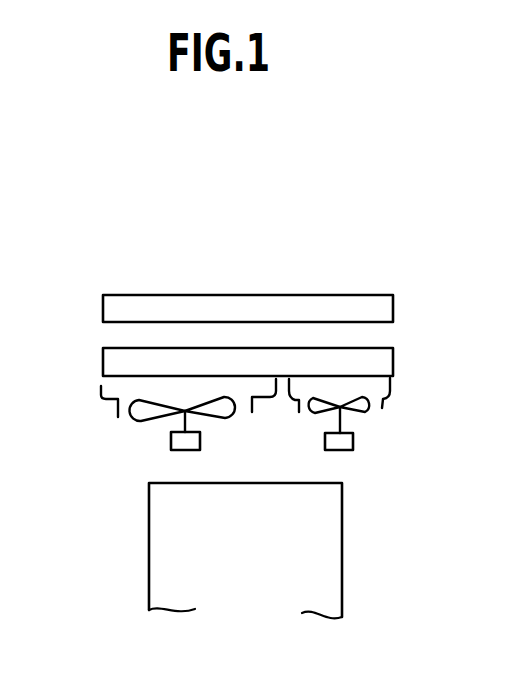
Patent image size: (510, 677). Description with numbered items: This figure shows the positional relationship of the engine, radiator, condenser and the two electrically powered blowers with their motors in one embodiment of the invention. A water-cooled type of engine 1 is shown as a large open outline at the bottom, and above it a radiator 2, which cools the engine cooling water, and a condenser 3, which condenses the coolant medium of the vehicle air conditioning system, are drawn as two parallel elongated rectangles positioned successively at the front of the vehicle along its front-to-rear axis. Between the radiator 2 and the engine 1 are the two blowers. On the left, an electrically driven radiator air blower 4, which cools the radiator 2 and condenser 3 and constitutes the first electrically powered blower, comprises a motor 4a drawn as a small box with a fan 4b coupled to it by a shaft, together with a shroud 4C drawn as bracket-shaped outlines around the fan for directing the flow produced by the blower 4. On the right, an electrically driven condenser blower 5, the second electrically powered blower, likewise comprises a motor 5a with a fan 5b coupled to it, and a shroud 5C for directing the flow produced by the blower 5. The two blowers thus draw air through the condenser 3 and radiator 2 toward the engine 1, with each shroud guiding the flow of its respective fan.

The water-cooled type of engine 1 is at (320, 563).
The radiator 2 is at (391, 358).
The condenser 3 is at (378, 296).
The radiator air blower 4 is at (153, 430).
The motor 4a is at (197, 447).
The fan 4b is at (141, 420).
The shroud 4C is at (101, 399).
The condenser blower 5 is at (368, 423).
The motor 5a is at (348, 450).
The fan 5b is at (313, 411).
The shroud 5C is at (394, 395).